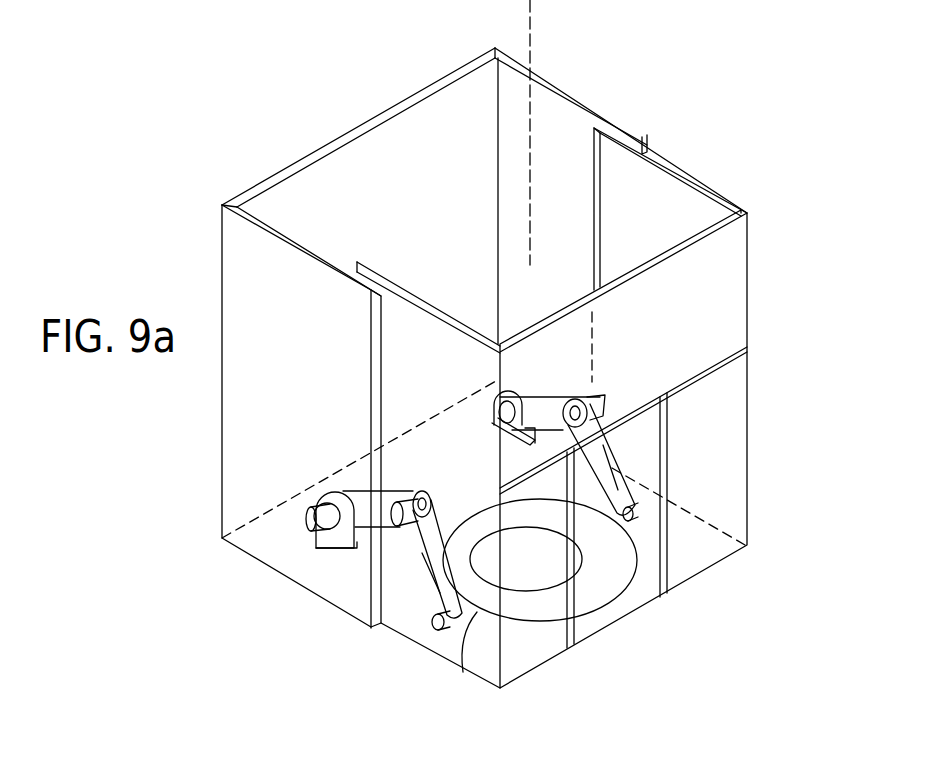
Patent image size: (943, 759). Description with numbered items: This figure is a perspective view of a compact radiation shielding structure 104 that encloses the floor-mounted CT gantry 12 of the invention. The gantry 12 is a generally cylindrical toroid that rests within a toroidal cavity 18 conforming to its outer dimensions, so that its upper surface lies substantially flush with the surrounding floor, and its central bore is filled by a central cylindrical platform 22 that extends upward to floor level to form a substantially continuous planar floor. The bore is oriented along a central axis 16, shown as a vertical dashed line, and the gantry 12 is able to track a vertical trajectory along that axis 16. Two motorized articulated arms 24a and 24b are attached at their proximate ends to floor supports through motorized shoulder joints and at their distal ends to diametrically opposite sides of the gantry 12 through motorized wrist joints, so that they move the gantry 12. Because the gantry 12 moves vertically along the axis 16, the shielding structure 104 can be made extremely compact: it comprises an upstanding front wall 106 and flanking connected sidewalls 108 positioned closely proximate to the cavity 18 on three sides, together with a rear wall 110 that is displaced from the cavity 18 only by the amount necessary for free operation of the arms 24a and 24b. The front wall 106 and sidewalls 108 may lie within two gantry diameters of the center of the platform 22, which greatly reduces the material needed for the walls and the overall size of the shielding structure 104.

The gantry 12 is at (593, 585).
The central axis 16 is at (531, 33).
The toroidal cavity 18 is at (459, 657).
The central cylindrical platform 22 is at (530, 562).
The motorized articulated arm 24a is at (362, 507).
The motorized articulated arm 24b is at (593, 457).
The radiation shielding structure 104 is at (516, 391).
The front wall 106 is at (718, 498).
The sidewalls 108 is at (723, 315).
The rear wall 110 is at (342, 183).